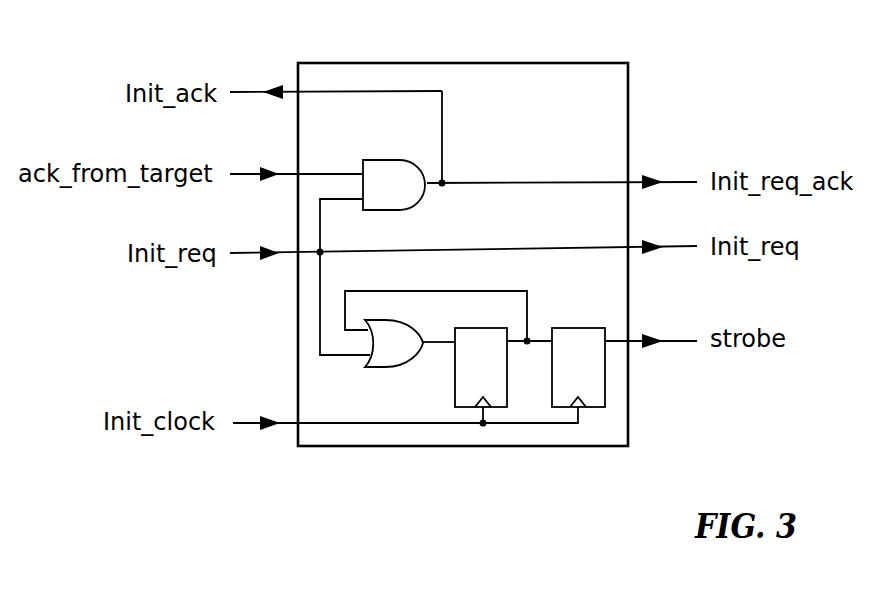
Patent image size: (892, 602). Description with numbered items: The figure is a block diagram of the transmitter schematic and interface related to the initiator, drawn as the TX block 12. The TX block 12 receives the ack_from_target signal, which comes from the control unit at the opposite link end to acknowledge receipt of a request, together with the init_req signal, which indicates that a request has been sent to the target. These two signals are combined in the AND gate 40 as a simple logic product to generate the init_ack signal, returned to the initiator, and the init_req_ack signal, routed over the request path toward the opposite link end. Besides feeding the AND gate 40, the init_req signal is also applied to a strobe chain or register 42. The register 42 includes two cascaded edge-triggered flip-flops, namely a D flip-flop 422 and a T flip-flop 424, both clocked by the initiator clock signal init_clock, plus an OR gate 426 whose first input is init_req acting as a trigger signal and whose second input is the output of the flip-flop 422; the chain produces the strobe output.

The TX block 12 is at (595, 77).
The AND gate 40 is at (390, 172).
The strobe chain 42 is at (405, 450).
The flip-flop 422 is at (493, 395).
The flip-flop 424 is at (595, 395).
The OR gate 426 is at (392, 348).